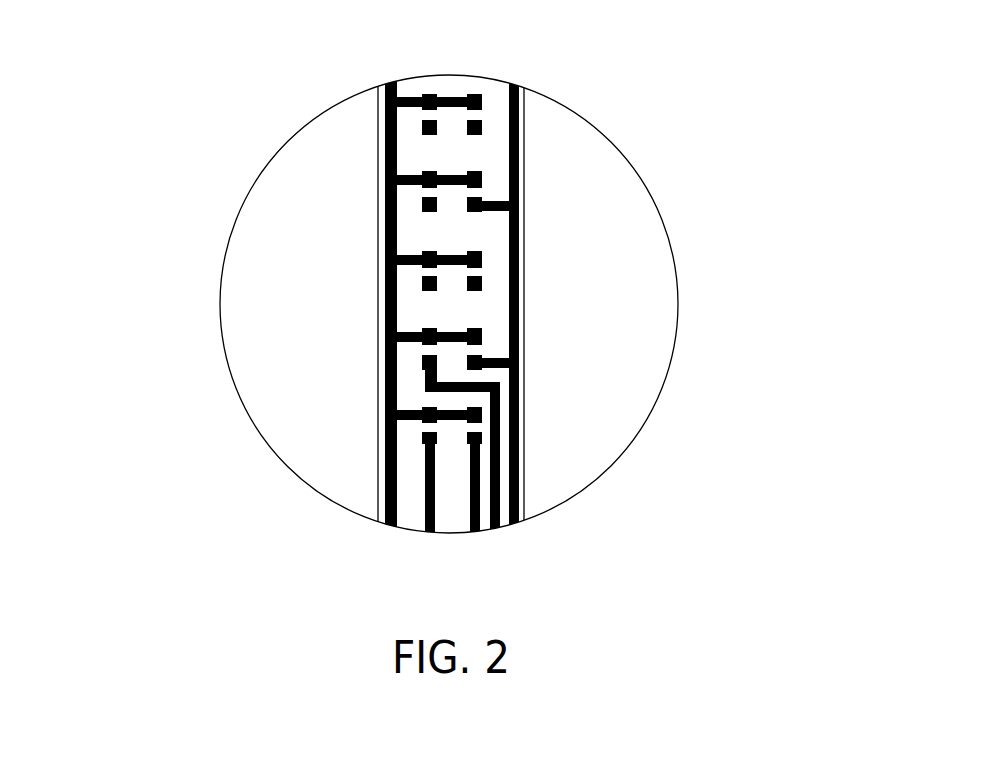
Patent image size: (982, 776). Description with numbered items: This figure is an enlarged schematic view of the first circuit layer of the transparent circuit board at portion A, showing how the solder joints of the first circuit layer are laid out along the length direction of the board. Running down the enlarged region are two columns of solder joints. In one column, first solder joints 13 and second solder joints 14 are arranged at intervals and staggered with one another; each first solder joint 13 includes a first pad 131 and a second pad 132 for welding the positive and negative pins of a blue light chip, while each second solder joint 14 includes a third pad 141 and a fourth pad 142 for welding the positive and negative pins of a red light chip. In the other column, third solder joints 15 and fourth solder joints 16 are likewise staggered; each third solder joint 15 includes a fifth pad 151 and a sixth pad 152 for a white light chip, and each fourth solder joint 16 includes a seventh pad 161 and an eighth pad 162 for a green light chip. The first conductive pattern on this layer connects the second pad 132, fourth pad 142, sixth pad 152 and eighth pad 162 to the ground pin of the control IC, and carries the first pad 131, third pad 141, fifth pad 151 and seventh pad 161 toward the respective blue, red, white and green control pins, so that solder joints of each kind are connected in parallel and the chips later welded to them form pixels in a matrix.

The portion A is at (550, 120).
The first solder joint 13 is at (256, 361).
The first pad 131 is at (422, 283).
The second pad 132 is at (422, 253).
The second solder joint 14 is at (267, 340).
The third pad 141 is at (423, 360).
The fourth pad 142 is at (423, 338).
The third solder joint 15 is at (667, 310).
The fifth pad 151 is at (482, 362).
The sixth pad 152 is at (482, 335).
The fourth solder joint 16 is at (641, 324).
The seventh pad 161 is at (480, 287).
The eighth pad 162 is at (480, 255).